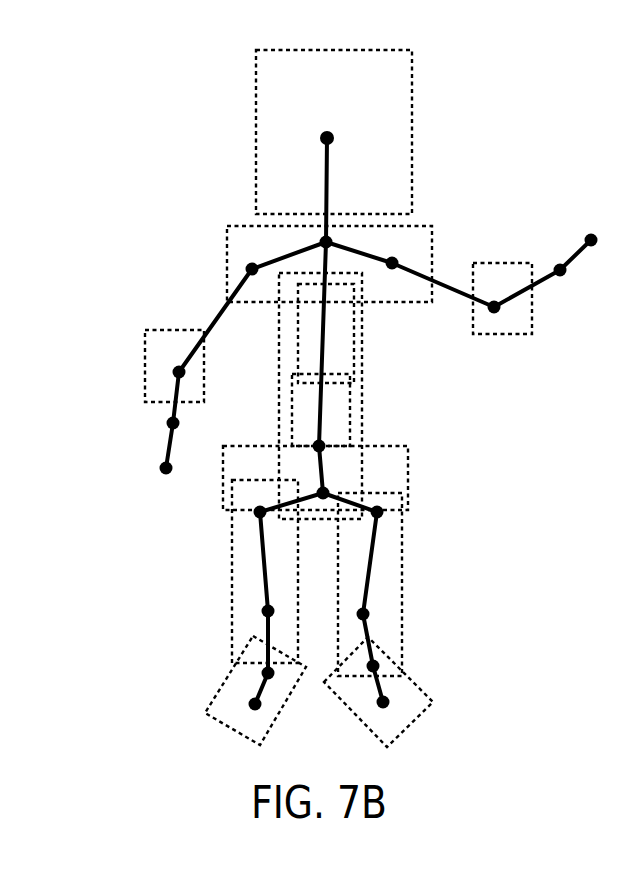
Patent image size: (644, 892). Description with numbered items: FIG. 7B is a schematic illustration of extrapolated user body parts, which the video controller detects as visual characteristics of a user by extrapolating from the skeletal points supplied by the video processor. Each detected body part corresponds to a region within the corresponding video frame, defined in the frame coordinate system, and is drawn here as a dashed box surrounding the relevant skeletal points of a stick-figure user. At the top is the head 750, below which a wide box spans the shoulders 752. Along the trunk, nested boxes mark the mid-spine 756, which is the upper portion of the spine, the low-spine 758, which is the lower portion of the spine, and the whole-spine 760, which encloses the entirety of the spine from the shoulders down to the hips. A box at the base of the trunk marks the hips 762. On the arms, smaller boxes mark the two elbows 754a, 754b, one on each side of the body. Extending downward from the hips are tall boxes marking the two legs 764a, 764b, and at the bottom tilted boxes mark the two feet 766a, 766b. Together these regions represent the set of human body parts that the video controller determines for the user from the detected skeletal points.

The head 750 is at (412, 134).
The shoulders 752 is at (418, 228).
The elbow 754a is at (145, 385).
The elbow 754b is at (532, 302).
The mid-spine 756 is at (354, 352).
The low-spine 758 is at (345, 430).
The whole-spine 760 is at (362, 389).
The hips 762 is at (408, 478).
The leg 764a is at (237, 593).
The leg 764b is at (402, 579).
The foot 766a is at (235, 667).
The foot 766b is at (413, 682).